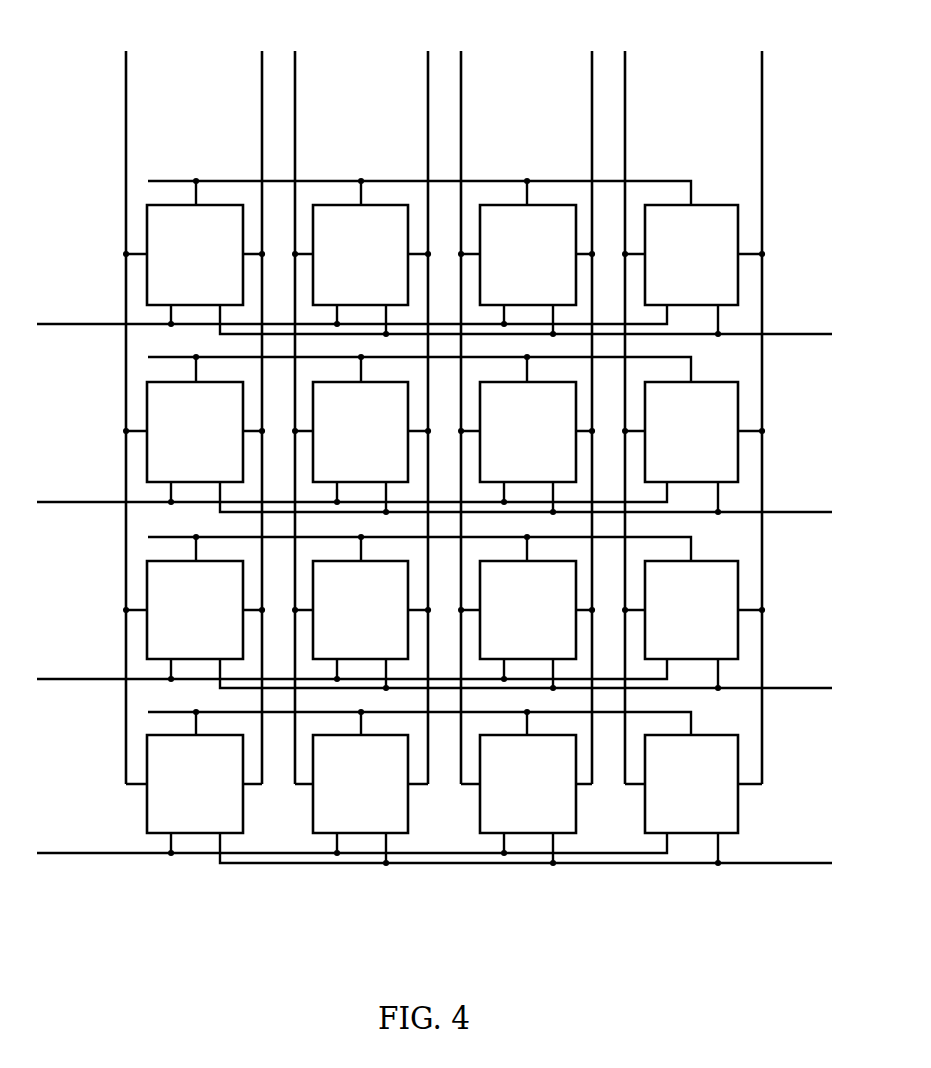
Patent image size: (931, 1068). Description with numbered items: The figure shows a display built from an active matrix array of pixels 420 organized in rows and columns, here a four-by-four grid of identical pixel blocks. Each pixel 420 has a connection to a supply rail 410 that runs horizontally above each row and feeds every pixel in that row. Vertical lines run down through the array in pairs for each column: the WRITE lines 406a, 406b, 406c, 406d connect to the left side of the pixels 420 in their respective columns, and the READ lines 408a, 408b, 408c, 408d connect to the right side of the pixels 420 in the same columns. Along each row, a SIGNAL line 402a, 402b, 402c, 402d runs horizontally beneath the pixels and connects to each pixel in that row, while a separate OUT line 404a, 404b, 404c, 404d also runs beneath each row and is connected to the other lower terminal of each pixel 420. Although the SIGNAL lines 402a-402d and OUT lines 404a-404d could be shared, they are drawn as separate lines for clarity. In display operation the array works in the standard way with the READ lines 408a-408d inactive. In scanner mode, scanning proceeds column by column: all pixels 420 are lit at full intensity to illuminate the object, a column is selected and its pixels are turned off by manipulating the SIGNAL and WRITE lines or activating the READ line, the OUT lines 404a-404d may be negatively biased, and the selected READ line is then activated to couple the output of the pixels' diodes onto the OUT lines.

The SIGNAL line 402a is at (73, 326).
The SIGNAL line 402b is at (73, 504).
The SIGNAL line 402c is at (73, 681).
The SIGNAL line 402d is at (73, 855).
The OUT line 404a is at (800, 337).
The OUT line 404b is at (800, 515).
The OUT line 404c is at (800, 691).
The OUT line 404d is at (800, 866).
The WRITE line 406a is at (124, 61).
The WRITE line 406b is at (297, 62).
The WRITE line 406c is at (463, 62).
The WRITE line 406d is at (627, 62).
The READ line 408a is at (260, 61).
The READ line 408b is at (426, 62).
The READ line 408c is at (590, 62).
The READ line 408d is at (760, 62).
The supply rail 410 is at (683, 181).
The pixel 420 is at (709, 796).